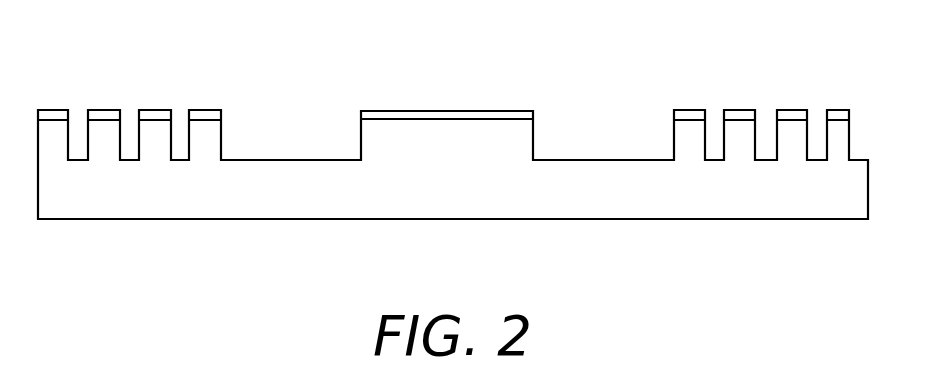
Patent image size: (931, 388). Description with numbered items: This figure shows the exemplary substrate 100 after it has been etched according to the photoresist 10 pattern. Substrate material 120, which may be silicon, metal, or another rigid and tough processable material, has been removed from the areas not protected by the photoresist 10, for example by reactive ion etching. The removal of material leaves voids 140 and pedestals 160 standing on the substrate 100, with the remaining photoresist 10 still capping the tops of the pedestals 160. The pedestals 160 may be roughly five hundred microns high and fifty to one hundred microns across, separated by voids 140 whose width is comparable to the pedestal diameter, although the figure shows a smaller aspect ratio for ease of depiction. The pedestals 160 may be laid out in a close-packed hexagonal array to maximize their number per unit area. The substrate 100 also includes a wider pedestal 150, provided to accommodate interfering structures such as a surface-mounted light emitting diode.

The substrate 100 is at (730, 70).
The photoresist 10 is at (55, 115).
The pedestals 160 is at (156, 135).
The voids 140 is at (255, 160).
The substrate material 120 is at (130, 205).
The wider pedestal 150 is at (438, 138).